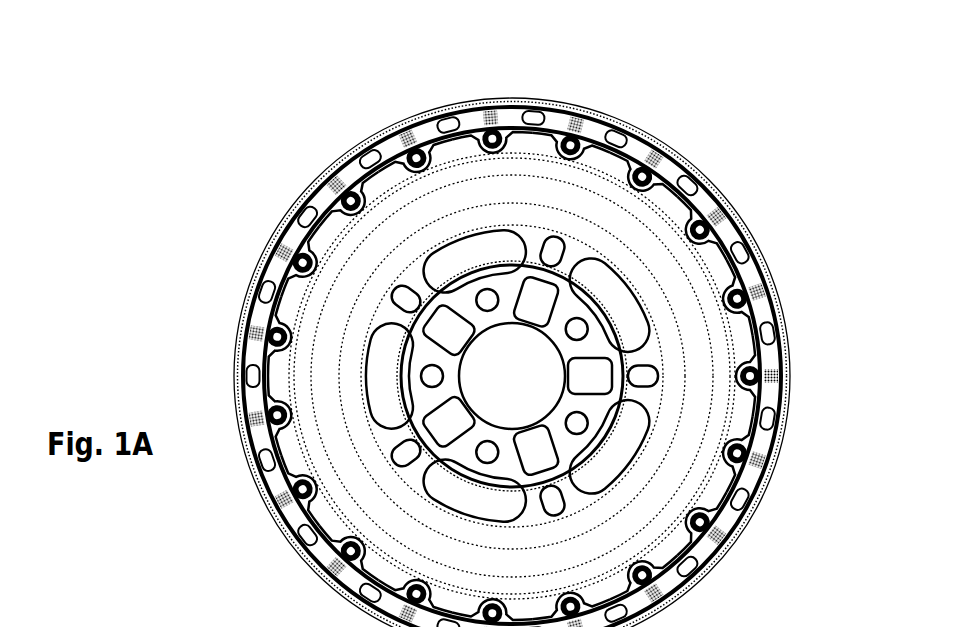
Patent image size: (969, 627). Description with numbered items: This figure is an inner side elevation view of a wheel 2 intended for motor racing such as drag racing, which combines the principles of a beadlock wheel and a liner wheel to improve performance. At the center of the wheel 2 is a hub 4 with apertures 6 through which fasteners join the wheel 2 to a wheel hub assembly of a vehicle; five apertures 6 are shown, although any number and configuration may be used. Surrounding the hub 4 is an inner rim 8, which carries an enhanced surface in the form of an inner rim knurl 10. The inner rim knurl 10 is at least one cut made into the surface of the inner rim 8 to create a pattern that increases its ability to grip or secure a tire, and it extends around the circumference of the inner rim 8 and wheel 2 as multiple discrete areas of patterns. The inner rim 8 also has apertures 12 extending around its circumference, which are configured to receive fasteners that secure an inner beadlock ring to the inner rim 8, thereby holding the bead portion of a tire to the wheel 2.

The wheel 2 is at (750, 93).
The hub 4 is at (609, 376).
The apertures 6 is at (611, 312).
The inner rim 8 is at (511, 348).
The inner rim knurl 10 is at (512, 332).
The apertures 12 is at (485, 360).